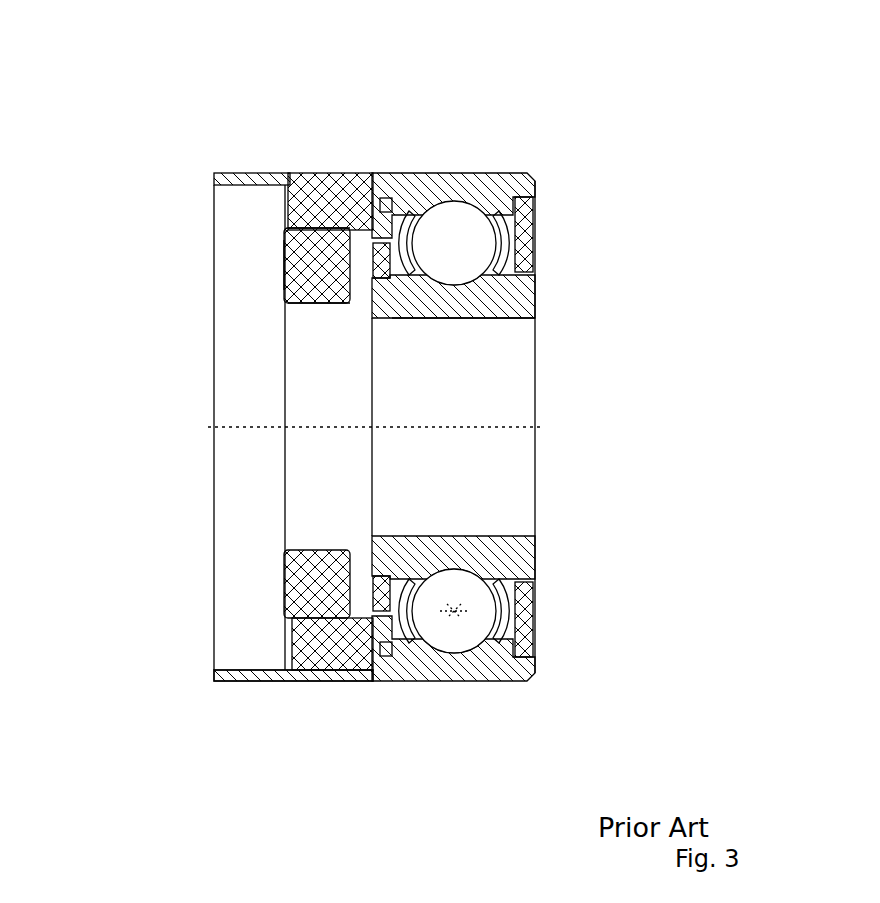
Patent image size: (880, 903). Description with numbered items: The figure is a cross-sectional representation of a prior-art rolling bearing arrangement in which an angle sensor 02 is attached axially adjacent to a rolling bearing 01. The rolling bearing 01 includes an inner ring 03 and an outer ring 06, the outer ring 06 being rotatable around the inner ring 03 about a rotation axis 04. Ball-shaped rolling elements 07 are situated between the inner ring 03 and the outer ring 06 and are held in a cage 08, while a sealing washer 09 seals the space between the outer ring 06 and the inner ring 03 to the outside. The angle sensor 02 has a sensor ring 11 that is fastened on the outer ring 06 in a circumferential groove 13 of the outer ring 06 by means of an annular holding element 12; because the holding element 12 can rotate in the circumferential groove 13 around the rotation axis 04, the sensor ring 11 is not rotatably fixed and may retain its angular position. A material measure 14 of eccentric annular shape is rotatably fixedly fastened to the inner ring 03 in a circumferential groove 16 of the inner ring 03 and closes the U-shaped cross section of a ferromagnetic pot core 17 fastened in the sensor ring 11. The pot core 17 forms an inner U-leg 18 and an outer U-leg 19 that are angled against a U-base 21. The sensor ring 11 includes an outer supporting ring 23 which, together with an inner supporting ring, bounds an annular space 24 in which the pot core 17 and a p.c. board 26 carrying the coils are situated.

The rolling bearing 01 is at (505, 395).
The angle sensor 02 is at (205, 343).
The inner ring 03 is at (535, 310).
The rotation axis 04 is at (361, 429).
The outer ring 06 is at (533, 187).
The rolling elements 07 is at (480, 244).
The cage 08 is at (507, 608).
The sealing washer 09 is at (533, 265).
The sensor ring 11 is at (258, 152).
The holding element 12 is at (373, 647).
The circumferential groove 13 is at (390, 650).
The material measure 14 is at (415, 305).
The circumferential groove 16 is at (392, 573).
The pot core 17 is at (287, 277).
The inner U-leg 18 is at (310, 303).
The outer U-leg 19 is at (287, 228).
The U-base 21 is at (287, 255).
The outer supporting ring 23 is at (282, 681).
The annular space 24 is at (283, 647).
The p.c. board 26 is at (290, 208).